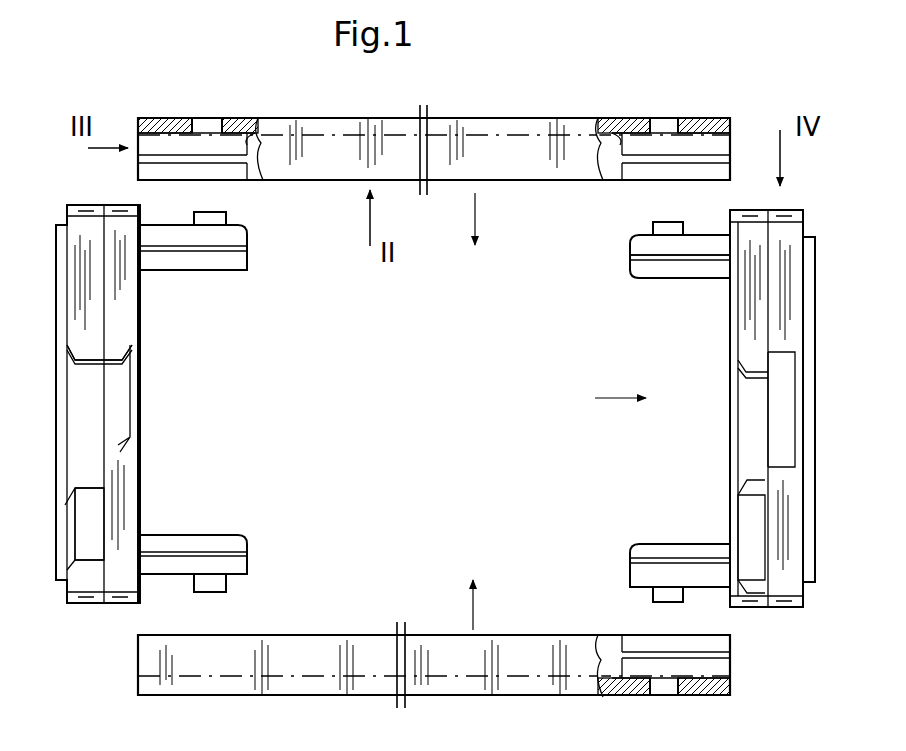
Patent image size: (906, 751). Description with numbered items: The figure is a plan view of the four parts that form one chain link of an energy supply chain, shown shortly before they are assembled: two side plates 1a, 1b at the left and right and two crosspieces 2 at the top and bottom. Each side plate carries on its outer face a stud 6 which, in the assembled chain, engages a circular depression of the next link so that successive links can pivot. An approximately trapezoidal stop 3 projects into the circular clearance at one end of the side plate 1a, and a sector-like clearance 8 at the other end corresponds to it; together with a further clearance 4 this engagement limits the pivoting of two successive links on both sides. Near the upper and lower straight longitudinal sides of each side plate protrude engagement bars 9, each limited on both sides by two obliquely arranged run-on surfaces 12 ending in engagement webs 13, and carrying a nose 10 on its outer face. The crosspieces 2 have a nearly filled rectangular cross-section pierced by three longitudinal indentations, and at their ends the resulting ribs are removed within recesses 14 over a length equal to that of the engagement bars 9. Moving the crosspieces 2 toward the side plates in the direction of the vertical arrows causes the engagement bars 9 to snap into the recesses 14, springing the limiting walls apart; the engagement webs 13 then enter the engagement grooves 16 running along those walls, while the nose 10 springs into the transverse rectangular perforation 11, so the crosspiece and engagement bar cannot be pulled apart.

The side plate 1a is at (805, 209).
The side plate 1b is at (66, 204).
The crosspiece 2 is at (518, 145).
The stop 3 is at (122, 396).
The clearance 4 is at (85, 463).
The stud 6 is at (785, 387).
The clearance 8 is at (755, 453).
The engagement bar 9 is at (250, 268).
The nose 10 is at (668, 223).
The perforation 11 is at (209, 128).
The run-on surface 12 is at (698, 242).
The engagement web 13 is at (680, 257).
The recess 14 is at (240, 142).
The engagement groove 16 is at (182, 146).